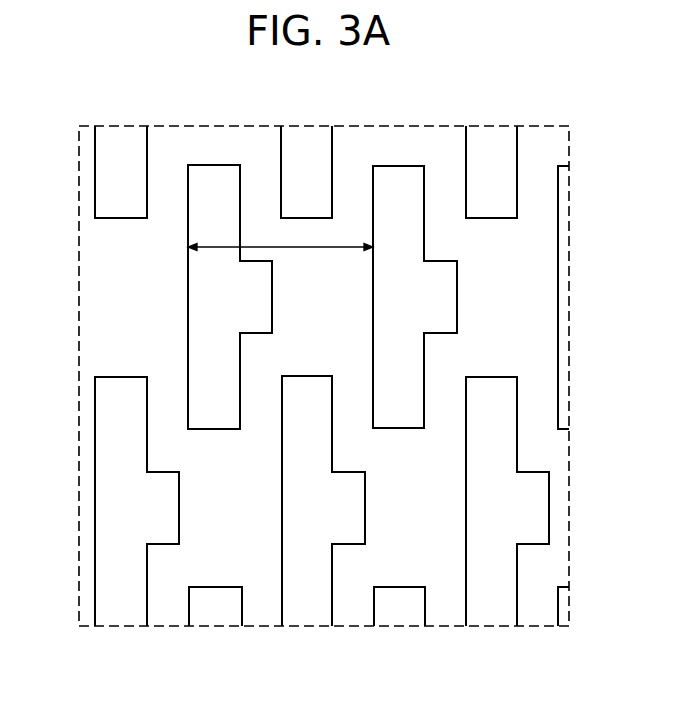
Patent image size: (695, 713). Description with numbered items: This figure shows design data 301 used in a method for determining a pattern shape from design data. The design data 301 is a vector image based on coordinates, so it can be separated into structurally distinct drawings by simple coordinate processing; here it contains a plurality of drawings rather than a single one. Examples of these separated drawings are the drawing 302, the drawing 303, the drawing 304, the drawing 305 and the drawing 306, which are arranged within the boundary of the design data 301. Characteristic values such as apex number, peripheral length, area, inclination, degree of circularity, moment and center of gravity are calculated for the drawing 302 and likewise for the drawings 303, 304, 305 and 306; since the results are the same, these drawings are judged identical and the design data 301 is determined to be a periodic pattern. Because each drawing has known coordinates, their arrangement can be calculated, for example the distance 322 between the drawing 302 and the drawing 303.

The design data 301 is at (161, 126).
The drawing 302 is at (188, 272).
The drawing 303 is at (400, 176).
The drawing 304 is at (119, 375).
The drawing 305 is at (302, 627).
The drawing 306 is at (492, 627).
The distance 322 is at (318, 247).